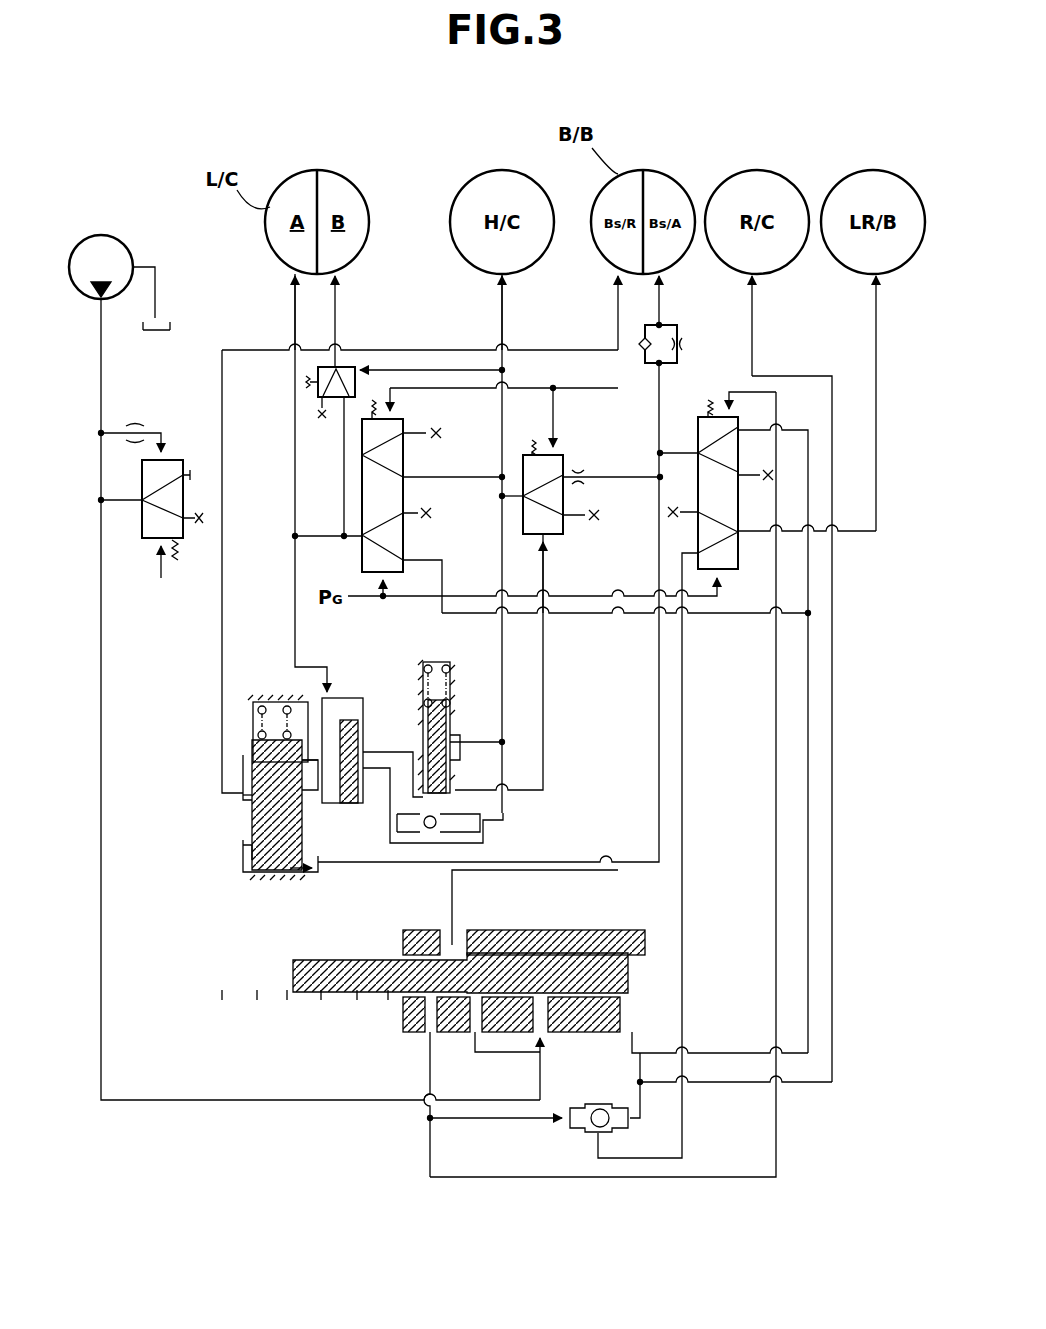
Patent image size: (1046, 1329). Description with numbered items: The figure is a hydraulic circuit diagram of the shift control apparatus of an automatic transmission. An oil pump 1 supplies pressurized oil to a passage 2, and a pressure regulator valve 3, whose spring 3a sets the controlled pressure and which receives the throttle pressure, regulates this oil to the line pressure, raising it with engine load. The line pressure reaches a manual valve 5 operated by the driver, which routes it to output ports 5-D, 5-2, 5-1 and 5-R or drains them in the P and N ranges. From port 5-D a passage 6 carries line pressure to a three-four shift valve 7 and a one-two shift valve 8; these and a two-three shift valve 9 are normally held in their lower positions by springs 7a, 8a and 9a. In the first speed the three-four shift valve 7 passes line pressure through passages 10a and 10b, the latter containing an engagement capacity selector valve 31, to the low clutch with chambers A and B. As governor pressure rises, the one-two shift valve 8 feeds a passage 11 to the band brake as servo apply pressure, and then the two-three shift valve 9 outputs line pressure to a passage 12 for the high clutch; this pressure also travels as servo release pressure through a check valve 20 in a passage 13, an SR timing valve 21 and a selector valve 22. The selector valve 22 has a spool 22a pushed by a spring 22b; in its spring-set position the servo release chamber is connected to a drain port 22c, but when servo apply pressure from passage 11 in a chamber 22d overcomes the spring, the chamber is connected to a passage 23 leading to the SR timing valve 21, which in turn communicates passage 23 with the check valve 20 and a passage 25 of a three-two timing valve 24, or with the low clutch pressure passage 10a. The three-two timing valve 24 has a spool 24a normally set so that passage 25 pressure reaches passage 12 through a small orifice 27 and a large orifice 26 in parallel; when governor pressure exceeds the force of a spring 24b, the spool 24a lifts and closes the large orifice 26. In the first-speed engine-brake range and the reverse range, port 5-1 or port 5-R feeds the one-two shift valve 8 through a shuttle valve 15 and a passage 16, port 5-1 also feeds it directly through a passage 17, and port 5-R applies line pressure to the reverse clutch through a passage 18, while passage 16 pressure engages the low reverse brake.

The oil pump 1 is at (98, 234).
The passage 2 is at (101, 608).
The pressure regulator valve 3 is at (173, 455).
The spring 3a is at (185, 564).
The manual valve 5 is at (395, 1026).
The port 5-1 is at (446, 1036).
The port 5-2 is at (465, 950).
The port 5-D is at (485, 1034).
The port 5-R is at (620, 1004).
The passage 6 is at (808, 612).
The 3-4 shift valve 7 is at (403, 498).
The spring 7a is at (380, 392).
The 1-2 shift valve 8 is at (727, 413).
The spring 8a is at (704, 405).
The 2-3 shift valve 9 is at (523, 534).
The spring 9a is at (532, 444).
The passage 10a is at (295, 465).
The passage 10b is at (344, 466).
The passage 11 is at (658, 436).
The passage 12 is at (502, 455).
The passage 13 is at (544, 348).
The shuttle valve 15 is at (580, 1124).
The passage 16 is at (685, 942).
The passage 17 is at (730, 1179).
The passage 18 is at (711, 1083).
The check valve 20 is at (433, 811).
The SR timing valve 21 is at (348, 692).
The selector valve 22 is at (238, 872).
The spool 22a is at (243, 800).
The spring 22b is at (268, 700).
The drain port 22c is at (308, 870).
The chamber 22d is at (242, 848).
The passage 23 is at (318, 778).
The 3-2 timing valve 24 is at (422, 660).
The spool 24a is at (450, 720).
The spring 24b is at (450, 675).
The passage 25 is at (378, 790).
The large orifice 26 is at (397, 754).
The small orifice 27 is at (433, 853).
The engagement capacity selector valve 31 is at (345, 364).